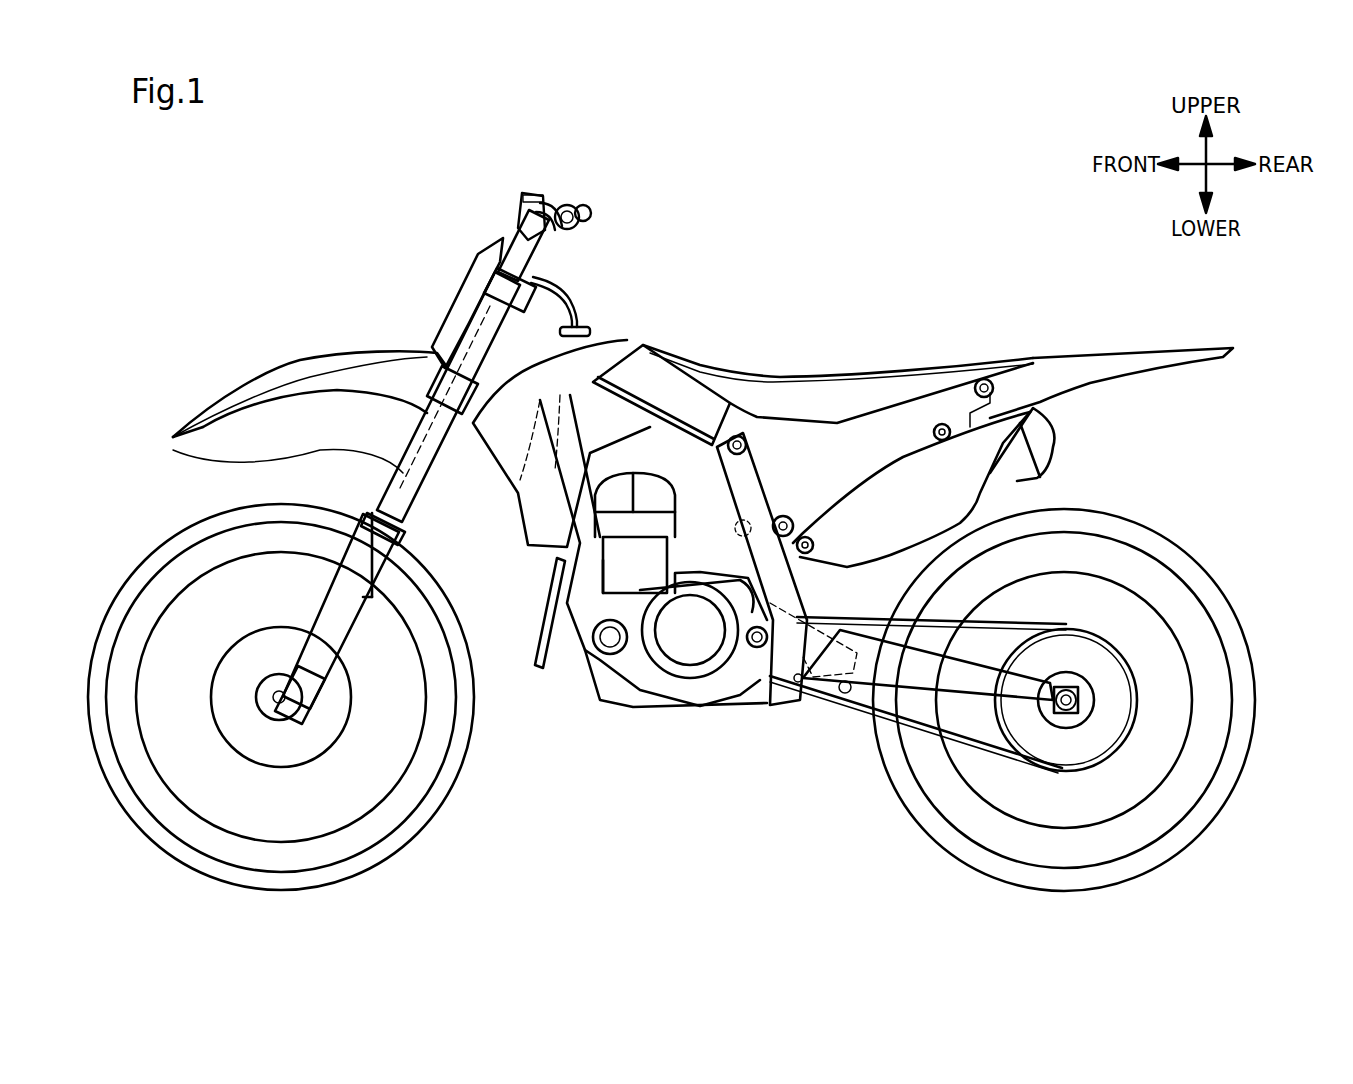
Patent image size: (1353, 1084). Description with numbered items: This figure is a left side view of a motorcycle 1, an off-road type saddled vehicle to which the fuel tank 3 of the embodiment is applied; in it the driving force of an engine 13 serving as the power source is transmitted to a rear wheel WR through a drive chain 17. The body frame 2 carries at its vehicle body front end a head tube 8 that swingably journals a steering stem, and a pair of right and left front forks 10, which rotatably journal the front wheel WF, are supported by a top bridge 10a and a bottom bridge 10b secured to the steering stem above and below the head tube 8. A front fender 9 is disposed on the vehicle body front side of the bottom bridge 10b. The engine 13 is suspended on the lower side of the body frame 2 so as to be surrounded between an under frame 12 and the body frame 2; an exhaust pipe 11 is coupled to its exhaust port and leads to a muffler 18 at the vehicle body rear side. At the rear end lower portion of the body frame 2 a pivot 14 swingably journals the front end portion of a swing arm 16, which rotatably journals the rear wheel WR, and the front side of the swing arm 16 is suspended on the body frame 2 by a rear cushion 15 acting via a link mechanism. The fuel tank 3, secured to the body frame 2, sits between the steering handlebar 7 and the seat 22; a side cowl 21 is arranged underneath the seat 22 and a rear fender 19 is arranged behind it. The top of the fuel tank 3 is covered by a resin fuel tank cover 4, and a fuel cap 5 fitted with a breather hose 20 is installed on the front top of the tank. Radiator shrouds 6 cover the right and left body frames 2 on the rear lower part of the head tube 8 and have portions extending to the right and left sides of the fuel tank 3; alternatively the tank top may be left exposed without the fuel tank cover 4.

The motorcycle 1 is at (760, 228).
The body frame 2 is at (751, 486).
The fuel tank 3 is at (712, 375).
The fuel tank cover 4 is at (655, 385).
The fuel cap 5 is at (583, 327).
The radiator shrouds 6 is at (503, 452).
The steering handlebar 7 is at (568, 205).
The head tube 8 is at (466, 330).
The front fender 9 is at (305, 370).
The front forks 10 is at (215, 448).
The top bridge 10a is at (490, 323).
The bottom bridge 10b is at (428, 375).
The exhaust pipe 11 is at (537, 640).
The under frame 12 is at (598, 672).
The engine 13 is at (634, 662).
The pivot 14 is at (757, 690).
The rear cushion 15 is at (808, 665).
The swing arm 16 is at (920, 675).
The drive chain 17 is at (1003, 740).
The muffler 18 is at (1008, 470).
The rear fender 19 is at (1078, 355).
The breather hose 20 is at (552, 283).
The side cowl 21 is at (880, 430).
The seat 22 is at (820, 385).
The front wheel WF is at (172, 845).
The rear wheel WR is at (1172, 848).